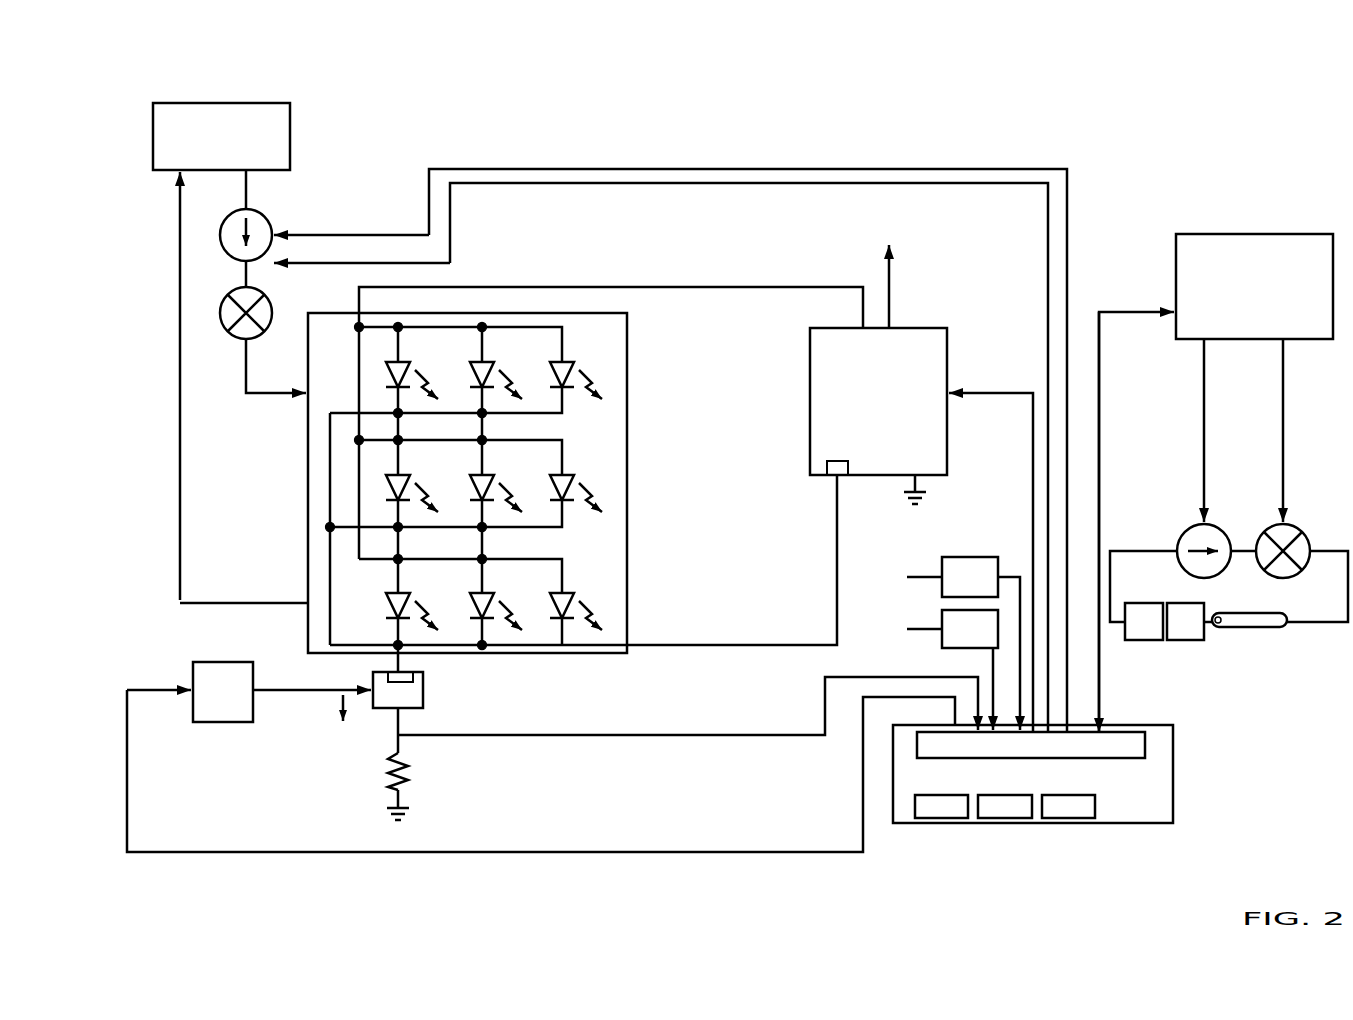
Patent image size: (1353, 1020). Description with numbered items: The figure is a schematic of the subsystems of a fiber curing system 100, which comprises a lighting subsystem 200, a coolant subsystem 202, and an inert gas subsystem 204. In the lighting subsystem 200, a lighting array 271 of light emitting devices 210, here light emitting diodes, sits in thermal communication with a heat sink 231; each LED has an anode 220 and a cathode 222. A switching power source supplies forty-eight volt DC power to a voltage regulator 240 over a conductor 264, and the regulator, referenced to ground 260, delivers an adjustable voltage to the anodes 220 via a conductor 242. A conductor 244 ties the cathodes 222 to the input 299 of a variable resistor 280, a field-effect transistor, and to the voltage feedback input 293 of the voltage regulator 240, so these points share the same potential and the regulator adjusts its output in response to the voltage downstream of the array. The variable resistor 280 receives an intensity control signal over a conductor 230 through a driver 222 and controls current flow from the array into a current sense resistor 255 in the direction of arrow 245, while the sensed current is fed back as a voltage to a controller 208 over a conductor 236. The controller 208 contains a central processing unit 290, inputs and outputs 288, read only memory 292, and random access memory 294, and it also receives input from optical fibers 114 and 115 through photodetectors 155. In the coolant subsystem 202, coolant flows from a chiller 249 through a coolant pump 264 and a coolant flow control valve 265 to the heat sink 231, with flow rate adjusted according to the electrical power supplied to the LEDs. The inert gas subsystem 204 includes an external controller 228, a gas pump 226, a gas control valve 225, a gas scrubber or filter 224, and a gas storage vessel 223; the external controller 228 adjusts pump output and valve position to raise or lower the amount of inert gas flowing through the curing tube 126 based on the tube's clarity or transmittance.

The fiber curing system 100 is at (104, 118).
The coolant subsystem 202 is at (336, 133).
The lighting subsystem 200 is at (948, 231).
The inert gas subsystem 204 is at (1158, 217).
The chiller 249 is at (230, 353).
The coolant flow control valve 265 is at (265, 218).
The coolant pump 264 is at (240, 338).
The lighting array 271 is at (651, 349).
The conductor or path 242 is at (592, 287).
The heat sink 231 is at (308, 517).
The anode 220 is at (397, 372).
The cathode 222 is at (396, 386).
The conductor or path 244 is at (692, 645).
The light emitting device 210 is at (432, 358).
The voltage regulator 240 is at (921, 530).
The voltage feedback input 293 is at (833, 472).
The ground 260 is at (922, 502).
The variable resistor 280 is at (428, 702).
The input 299 is at (386, 677).
The arrow 245 is at (336, 705).
The conductor or path 230 is at (135, 690).
The conductor 236 is at (461, 737).
The current sense resistor 255 is at (406, 778).
The photodetector 155 is at (981, 643).
The optical fiber 114 is at (907, 577).
The optical fiber 115 is at (907, 629).
The controller 208 is at (1143, 785).
The inputs and outputs 288 is at (1031, 745).
The central processing unit 290 is at (941, 806).
The read only memory 292 is at (1005, 806).
The random access memory 294 is at (1068, 806).
The external controller 228 is at (1280, 234).
The gas pump 226 is at (1185, 535).
The gas control valve 225 is at (1306, 536).
The gas storage vessel 223 is at (1133, 640).
The gas scrubber or filter 224 is at (1183, 640).
The curing tube 126 is at (1254, 627).